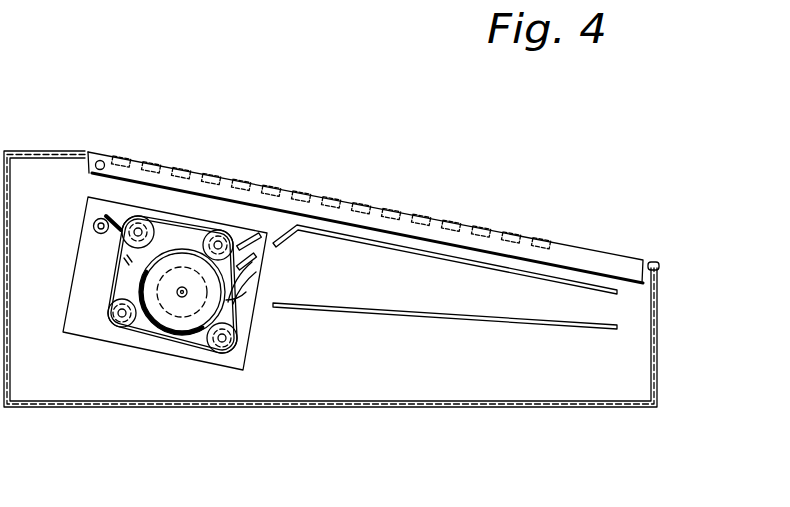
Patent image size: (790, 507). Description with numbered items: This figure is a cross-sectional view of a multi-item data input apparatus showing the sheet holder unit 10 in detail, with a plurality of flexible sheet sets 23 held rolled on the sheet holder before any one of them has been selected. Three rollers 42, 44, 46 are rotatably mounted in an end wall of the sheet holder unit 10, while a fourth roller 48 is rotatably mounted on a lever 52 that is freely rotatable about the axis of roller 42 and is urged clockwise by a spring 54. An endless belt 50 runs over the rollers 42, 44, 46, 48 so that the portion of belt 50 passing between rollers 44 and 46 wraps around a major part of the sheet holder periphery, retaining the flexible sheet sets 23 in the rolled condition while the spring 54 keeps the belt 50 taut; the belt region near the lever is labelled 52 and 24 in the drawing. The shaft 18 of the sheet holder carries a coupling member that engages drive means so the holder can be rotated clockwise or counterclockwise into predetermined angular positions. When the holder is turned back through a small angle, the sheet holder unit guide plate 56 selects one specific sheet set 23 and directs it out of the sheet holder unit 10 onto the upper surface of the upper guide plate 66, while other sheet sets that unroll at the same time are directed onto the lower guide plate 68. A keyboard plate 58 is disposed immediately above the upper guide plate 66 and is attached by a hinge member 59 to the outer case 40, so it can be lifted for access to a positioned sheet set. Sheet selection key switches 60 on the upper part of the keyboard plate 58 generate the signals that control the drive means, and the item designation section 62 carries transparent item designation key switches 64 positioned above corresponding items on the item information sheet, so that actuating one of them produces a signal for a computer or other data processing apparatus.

The sheet holder unit 10 is at (80, 241).
The shaft 18 is at (182, 295).
The flexible sheet sets 23 is at (233, 300).
The drum rim 24 is at (157, 292).
The outer case 40 is at (667, 380).
The roller 42 is at (127, 214).
The roller 44 is at (228, 226).
The roller 46 is at (242, 345).
The roller 48 is at (107, 333).
The endless belt 50 is at (192, 218).
The lever 52 is at (125, 278).
The spring 54 is at (120, 203).
The sheet holder unit guide plate 56 is at (252, 262).
The keyboard plate 58 is at (296, 188).
The hinge member 59 is at (96, 158).
The sheet selection key switches 60 is at (212, 178).
The item designation section 62 is at (392, 204).
The item designation key switches 64 is at (450, 217).
The upper guide plate 66 is at (345, 235).
The lower guide plate 68 is at (427, 318).